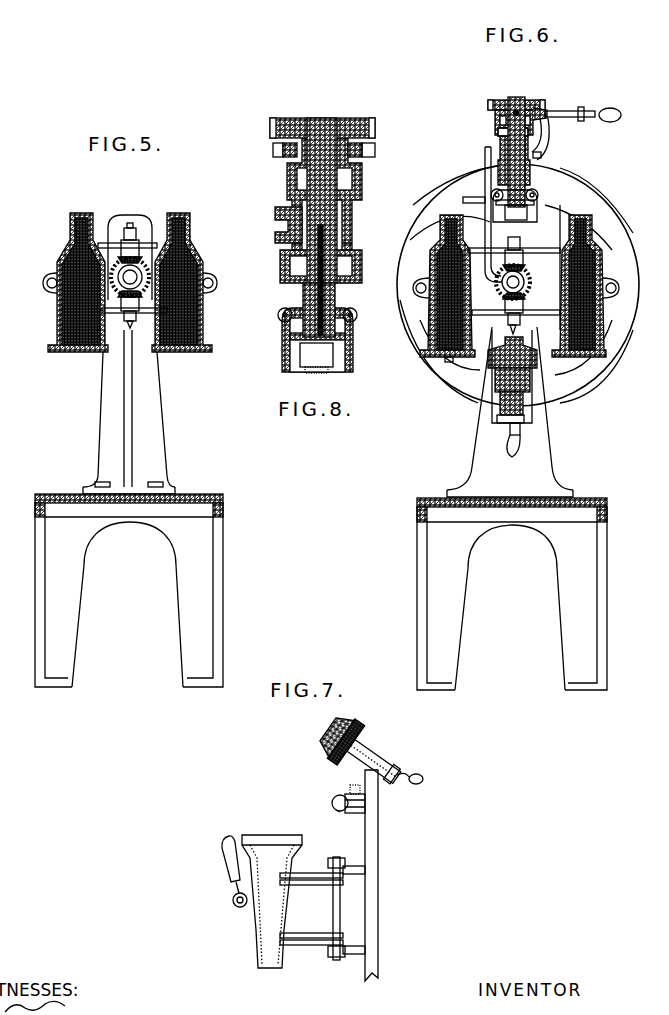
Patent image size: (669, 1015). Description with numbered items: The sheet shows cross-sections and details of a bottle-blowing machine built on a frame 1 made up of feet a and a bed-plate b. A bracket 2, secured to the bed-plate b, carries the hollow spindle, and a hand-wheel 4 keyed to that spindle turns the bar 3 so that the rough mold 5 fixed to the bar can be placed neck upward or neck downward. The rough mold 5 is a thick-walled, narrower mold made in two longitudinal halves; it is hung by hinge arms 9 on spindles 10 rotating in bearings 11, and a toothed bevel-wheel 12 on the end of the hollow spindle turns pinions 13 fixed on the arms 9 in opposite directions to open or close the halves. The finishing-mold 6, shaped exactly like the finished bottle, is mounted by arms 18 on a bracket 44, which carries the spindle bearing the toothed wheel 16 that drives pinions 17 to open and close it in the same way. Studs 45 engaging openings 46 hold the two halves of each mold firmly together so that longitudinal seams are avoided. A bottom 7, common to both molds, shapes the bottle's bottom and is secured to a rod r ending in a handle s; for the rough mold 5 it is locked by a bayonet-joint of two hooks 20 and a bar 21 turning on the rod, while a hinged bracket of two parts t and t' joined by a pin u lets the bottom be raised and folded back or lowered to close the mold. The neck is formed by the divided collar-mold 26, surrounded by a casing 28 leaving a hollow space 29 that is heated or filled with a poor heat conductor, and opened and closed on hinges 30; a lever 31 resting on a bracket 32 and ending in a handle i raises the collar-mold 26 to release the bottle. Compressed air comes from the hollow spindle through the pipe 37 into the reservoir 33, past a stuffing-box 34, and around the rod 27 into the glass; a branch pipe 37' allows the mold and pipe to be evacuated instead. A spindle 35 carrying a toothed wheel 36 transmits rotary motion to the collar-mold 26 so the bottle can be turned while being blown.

In FIG. 5, the frame 1 is at (146, 524).
In FIG. 6, the frame 1 is at (530, 533).
In FIG. 6, the bracket 2 is at (510, 412).
In FIG. 6, the bar 3 is at (558, 250).
In FIG. 7, the bar 3 is at (376, 822).
In FIG. 6, the hand-wheel 4 is at (600, 203).
In FIG. 6, the rough mold 5 is at (432, 258).
In FIG. 7, the rough mold 5 is at (282, 855).
In FIG. 5, the finishing-mold 6 is at (70, 232).
In FIG. 6, the bottom 7 is at (515, 350).
In FIG. 7, the bottom 7 is at (328, 742).
In FIG. 6, the arms 9 is at (484, 258).
In FIG. 7, the arms 9 is at (305, 873).
In FIG. 7, the spindles 10 is at (336, 896).
In FIG. 6, the bearings 11 is at (524, 308).
In FIG. 7, the bearings 11 is at (355, 866).
In FIG. 6, the toothed bevel-wheel 12 is at (531, 284).
In FIG. 6, the pinions 13 is at (524, 262).
In FIG. 5, the toothed wheel 16 is at (145, 273).
In FIG. 5, the pinions 17 is at (134, 281).
In FIG. 5, the arms 18 is at (99, 250).
In FIG. 6, the hooks 20 is at (450, 358).
In FIG. 6, the bar 21 is at (534, 205).
In FIG. 8, the collar-mold 26 is at (316, 358).
In FIG. 6, the collar-mold 26 is at (515, 218).
In FIG. 8, the rod 27 is at (322, 300).
In FIG. 8, the casing 28 is at (300, 337).
In FIG. 8, the hollow space 29 is at (290, 350).
In FIG. 6, the hollow space 29 is at (537, 218).
In FIG. 8, the hinges 30 is at (282, 314).
In FIG. 6, the hinges 30 is at (538, 196).
In FIG. 6, the lever 31 is at (551, 112).
In FIG. 6, the bracket 32 is at (546, 137).
In FIG. 8, the reservoir 33 is at (298, 250).
In FIG. 6, the reservoir 33 is at (542, 155).
In FIG. 8, the stuffing-box 34 is at (362, 195).
In FIG. 6, the stuffing-box 34 is at (497, 131).
In FIG. 8, the spindle 35 is at (322, 124).
In FIG. 6, the spindle 35 is at (515, 97).
In FIG. 8, the toothed wheel 36 is at (270, 130).
In FIG. 6, the toothed wheel 36 is at (490, 104).
In FIG. 8, the pipe 37 is at (274, 225).
In FIG. 6, the pipe 37 is at (480, 212).
In FIG. 6, the branch pipe 37' is at (454, 186).
In FIG. 5, the bracket 44 is at (138, 408).
In FIG. 5, the studs 45 is at (44, 284).
In FIG. 5, the openings 46 is at (217, 284).
In FIG. 5, the feet a is at (129, 595).
In FIG. 6, the feet a is at (512, 598).
In FIG. 5, the bed-plate b is at (129, 506).
In FIG. 6, the bed-plate b is at (512, 510).
In FIG. 6, the handle i is at (610, 108).
In FIG. 8, the nut j is at (273, 150).
In FIG. 6, the body K is at (495, 116).
In FIG. 6, the rod r is at (537, 378).
In FIG. 6, the handle s is at (520, 440).
In FIG. 7, the handle s is at (410, 770).
In FIG. 7, the part of hinged bracket t is at (368, 756).
In FIG. 7, the part of hinged bracket t' is at (331, 822).
In FIG. 7, the pin u is at (333, 803).
In FIG. 7, the lever g is at (236, 834).